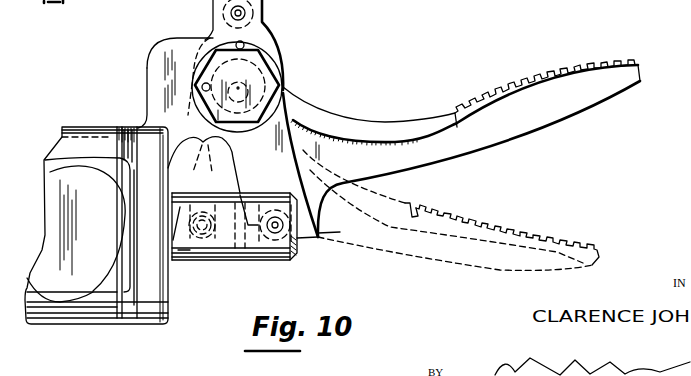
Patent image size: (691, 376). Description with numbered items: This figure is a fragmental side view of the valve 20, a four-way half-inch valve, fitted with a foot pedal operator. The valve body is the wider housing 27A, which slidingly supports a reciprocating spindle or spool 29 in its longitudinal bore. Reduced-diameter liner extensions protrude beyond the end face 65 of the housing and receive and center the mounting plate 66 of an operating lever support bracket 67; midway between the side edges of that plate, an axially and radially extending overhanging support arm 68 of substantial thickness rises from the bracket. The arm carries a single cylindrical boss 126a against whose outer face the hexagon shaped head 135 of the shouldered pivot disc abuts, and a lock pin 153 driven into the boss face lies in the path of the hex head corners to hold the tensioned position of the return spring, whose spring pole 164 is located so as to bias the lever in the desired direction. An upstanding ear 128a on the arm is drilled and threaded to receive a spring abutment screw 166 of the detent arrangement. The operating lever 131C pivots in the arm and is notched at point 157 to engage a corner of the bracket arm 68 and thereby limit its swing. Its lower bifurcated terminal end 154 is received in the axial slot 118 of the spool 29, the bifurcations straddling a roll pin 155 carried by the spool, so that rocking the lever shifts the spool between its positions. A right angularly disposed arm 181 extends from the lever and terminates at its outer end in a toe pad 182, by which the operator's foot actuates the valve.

The valve 20 is at (101, 326).
The housing 27A is at (88, 127).
The end face 65 is at (137, 302).
The mounting plate 66 is at (150, 324).
The operating lever support bracket 67 is at (147, 74).
The overhanging support arm 68 is at (178, 47).
The upstanding ear 128a is at (246, 13).
The spring abutment screw 166 is at (262, 22).
The lock pin 153 is at (244, 45).
The boss 126a is at (268, 57).
The hexagon shaped head 135 is at (279, 85).
The spring pole 164 is at (209, 85).
The right angularly disposed arm 181 is at (377, 133).
The toe pad 182 is at (573, 70).
The bifurcated terminal end 154 is at (315, 240).
The operating lever 131C is at (288, 170).
The notch 157 is at (193, 163).
The roll pin 155 is at (275, 216).
The spindle 29 is at (197, 253).
The axial slot 118 is at (242, 253).